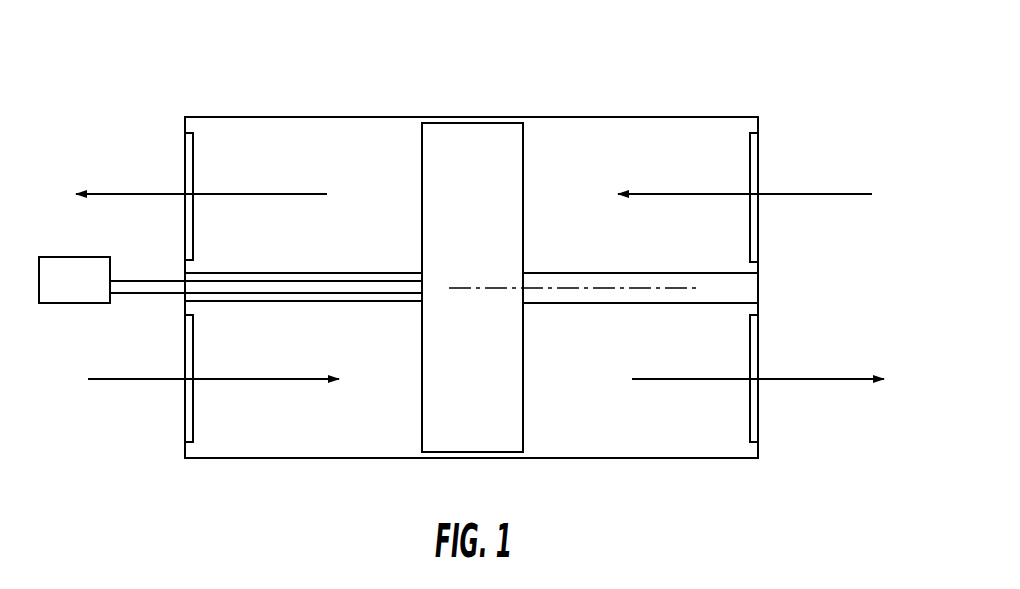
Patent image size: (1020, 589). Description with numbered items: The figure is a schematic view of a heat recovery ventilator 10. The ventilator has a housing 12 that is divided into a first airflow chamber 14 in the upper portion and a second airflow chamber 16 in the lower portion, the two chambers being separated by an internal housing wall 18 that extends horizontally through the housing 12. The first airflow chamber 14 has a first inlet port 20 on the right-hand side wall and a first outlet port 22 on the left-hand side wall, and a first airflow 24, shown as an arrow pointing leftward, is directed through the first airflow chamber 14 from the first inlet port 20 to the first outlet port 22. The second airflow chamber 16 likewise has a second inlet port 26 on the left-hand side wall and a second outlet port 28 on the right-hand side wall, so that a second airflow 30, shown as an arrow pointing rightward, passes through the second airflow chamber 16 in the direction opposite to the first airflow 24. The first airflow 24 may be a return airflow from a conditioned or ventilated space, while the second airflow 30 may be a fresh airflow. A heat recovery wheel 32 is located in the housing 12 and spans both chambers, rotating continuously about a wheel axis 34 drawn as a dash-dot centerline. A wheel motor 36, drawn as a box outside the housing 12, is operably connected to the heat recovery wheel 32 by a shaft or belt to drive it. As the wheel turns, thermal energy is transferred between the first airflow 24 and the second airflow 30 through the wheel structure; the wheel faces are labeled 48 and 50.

The heat recovery ventilator 10 is at (172, 60).
The housing 12 is at (320, 117).
The first airflow chamber 14 is at (353, 171).
The second airflow chamber 16 is at (575, 436).
The internal housing wall 18 is at (670, 273).
The first inlet port 20 is at (760, 168).
The first outlet port 22 is at (185, 153).
The first airflow 24 is at (695, 190).
The second inlet port 26 is at (185, 418).
The second outlet port 28 is at (760, 345).
The second airflow 30 is at (265, 380).
The heat recovery wheel 32 is at (482, 203).
The wheel axis 34 is at (570, 290).
The wheel motor 36 is at (84, 295).
The first piston face 48 is at (523, 210).
The second piston face 50 is at (422, 235).